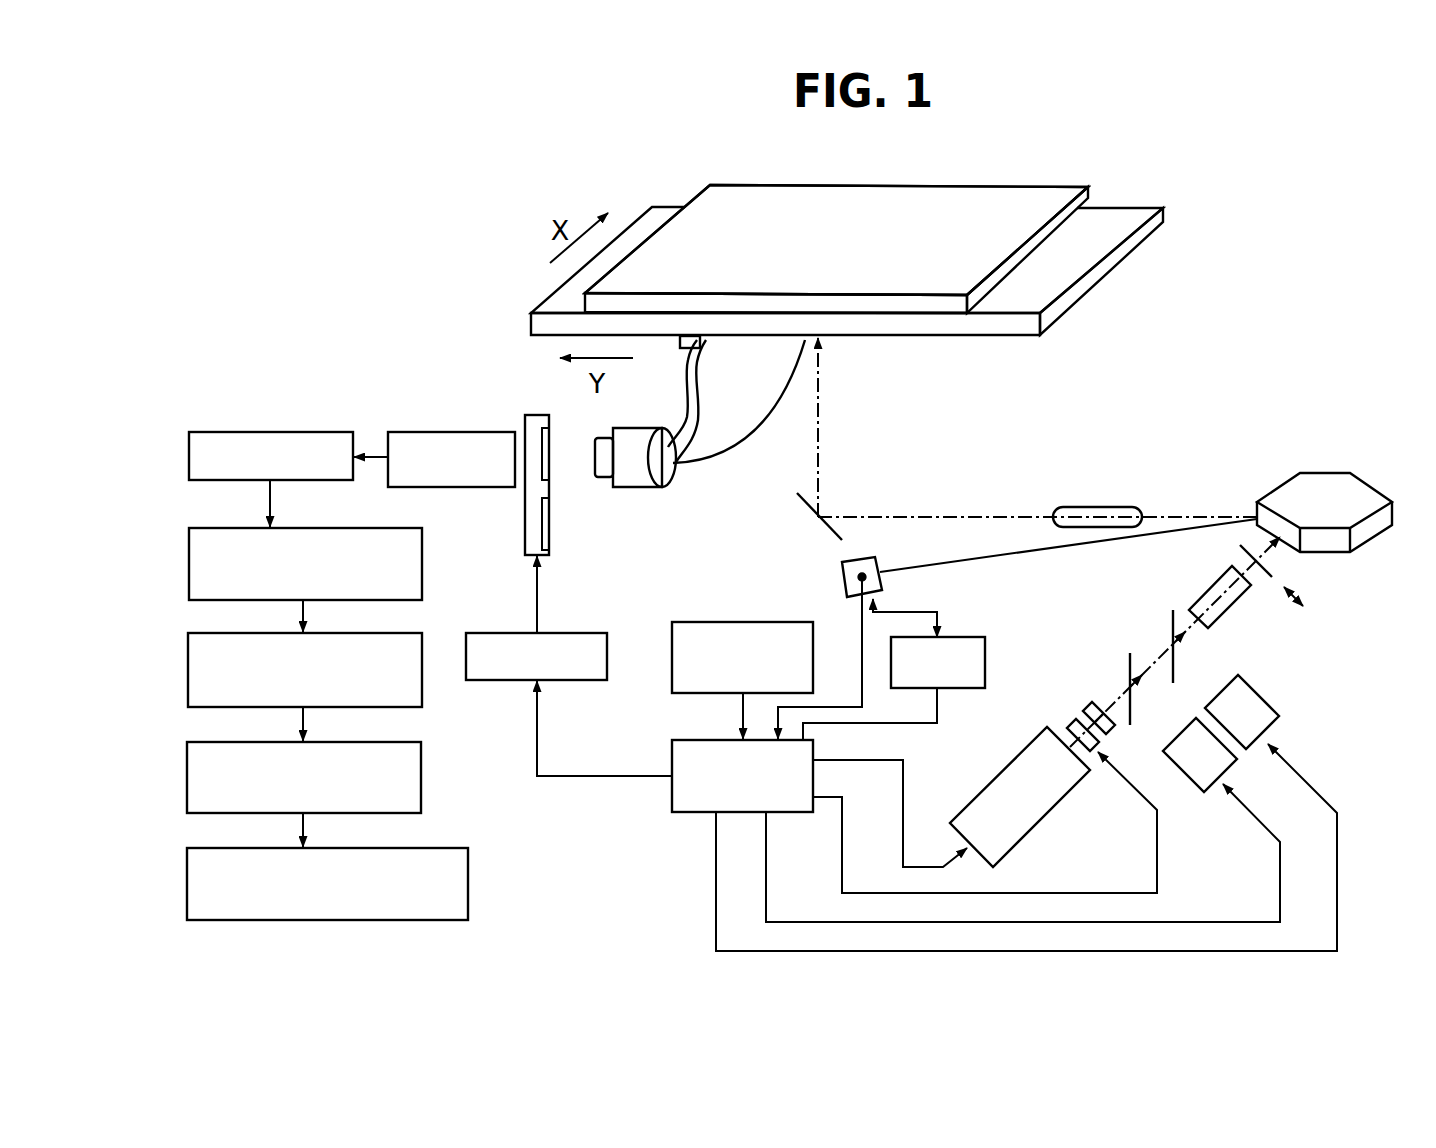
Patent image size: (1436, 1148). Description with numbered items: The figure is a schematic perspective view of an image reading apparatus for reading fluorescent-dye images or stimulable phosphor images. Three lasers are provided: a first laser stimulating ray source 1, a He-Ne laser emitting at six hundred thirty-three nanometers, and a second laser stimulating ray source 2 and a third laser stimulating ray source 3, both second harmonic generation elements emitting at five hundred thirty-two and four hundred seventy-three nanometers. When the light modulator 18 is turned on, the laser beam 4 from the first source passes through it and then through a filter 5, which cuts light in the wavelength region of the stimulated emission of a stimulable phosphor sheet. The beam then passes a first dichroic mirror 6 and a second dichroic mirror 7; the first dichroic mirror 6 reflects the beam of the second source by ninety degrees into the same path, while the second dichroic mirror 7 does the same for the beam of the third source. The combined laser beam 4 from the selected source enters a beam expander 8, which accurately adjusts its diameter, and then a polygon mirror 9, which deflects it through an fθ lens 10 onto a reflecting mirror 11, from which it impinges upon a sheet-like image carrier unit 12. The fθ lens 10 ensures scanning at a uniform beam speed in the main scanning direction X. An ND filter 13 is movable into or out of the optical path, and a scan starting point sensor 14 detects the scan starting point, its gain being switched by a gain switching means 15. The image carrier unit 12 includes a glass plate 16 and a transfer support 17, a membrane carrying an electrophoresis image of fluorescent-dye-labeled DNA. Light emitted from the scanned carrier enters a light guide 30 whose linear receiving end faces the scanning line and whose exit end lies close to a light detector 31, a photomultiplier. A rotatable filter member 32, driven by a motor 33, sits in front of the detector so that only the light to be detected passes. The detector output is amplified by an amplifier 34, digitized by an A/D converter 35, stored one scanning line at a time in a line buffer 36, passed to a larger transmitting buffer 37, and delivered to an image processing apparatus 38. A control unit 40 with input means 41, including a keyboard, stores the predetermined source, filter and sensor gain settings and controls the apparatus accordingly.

The first laser stimulating ray source 1 is at (990, 793).
The second laser stimulating ray source 2 is at (1223, 760).
The third laser stimulating ray source 3 is at (1258, 705).
The laser beam 4 is at (942, 517).
The filter 5 is at (1087, 713).
The first dichroic mirror 6 is at (1127, 677).
The second dichroic mirror 7 is at (1172, 643).
The beam expander 8 is at (1237, 598).
The polygon mirror 9 is at (1322, 495).
The fθ lens 10 is at (1102, 510).
The reflecting mirror 11 is at (827, 530).
The image carrier unit 12 is at (733, 182).
The ND filter 13 is at (1247, 557).
The scan starting point sensor 14 is at (843, 577).
The gain switching means 15 is at (965, 642).
The glass plate 16 is at (983, 333).
The transfer support 17 is at (897, 230).
The light modulator 18 is at (1068, 725).
The light guide 30 is at (713, 437).
The light detector 31 is at (437, 472).
The filter member 32 is at (530, 508).
The motor 33 is at (497, 683).
The amplifier 34 is at (225, 432).
The A/D converter 35 is at (423, 543).
The line buffer 36 is at (423, 653).
The transmitting buffer 37 is at (422, 763).
The image processing apparatus 38 is at (470, 873).
The control unit 40 is at (685, 813).
The input means 41 is at (702, 622).